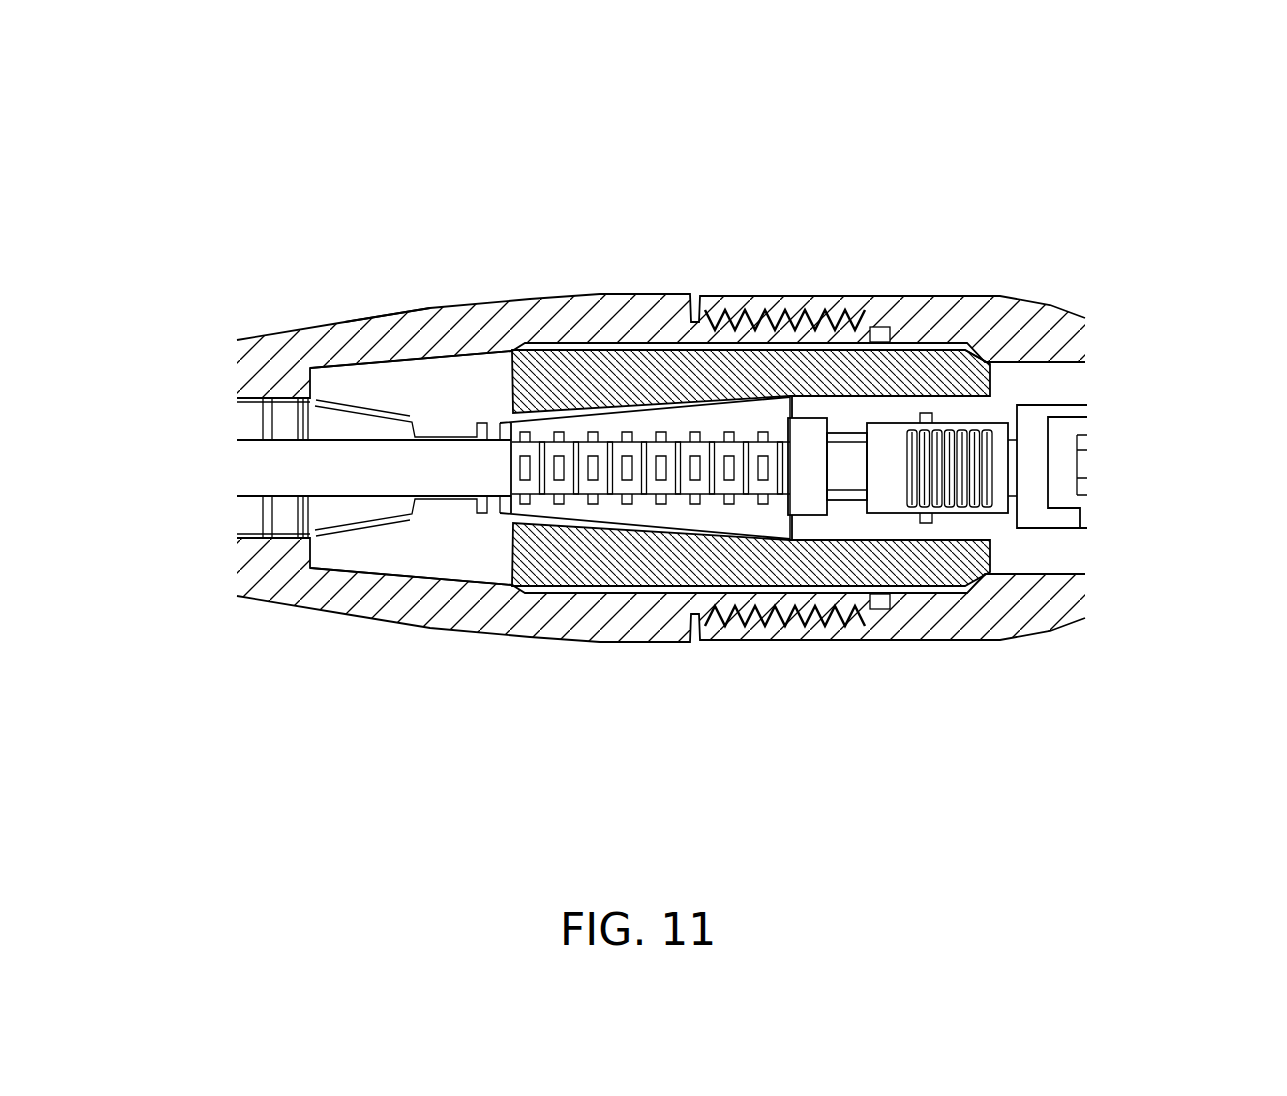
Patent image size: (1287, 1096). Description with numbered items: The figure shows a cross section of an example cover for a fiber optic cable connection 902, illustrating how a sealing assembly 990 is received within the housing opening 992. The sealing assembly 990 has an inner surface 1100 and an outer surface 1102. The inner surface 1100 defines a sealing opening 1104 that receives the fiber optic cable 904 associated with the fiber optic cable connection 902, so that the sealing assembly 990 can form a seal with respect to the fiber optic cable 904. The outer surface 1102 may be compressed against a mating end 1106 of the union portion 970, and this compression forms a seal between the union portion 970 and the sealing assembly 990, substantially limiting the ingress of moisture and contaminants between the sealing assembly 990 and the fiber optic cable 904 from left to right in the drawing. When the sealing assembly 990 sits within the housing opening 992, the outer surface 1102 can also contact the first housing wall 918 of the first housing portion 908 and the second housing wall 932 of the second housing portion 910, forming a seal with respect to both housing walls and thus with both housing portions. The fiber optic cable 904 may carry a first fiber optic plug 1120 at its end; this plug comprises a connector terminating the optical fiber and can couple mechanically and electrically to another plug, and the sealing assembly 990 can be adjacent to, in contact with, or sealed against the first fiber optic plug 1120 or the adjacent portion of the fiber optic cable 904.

The fiber optic cable connection 902 is at (1112, 375).
The fiber optic cable 904 is at (240, 440).
The first housing portion 908 is at (350, 322).
The second housing portion 910 is at (371, 612).
The first housing wall 918 is at (383, 325).
The second housing wall 932 is at (412, 600).
The union portion 970 is at (872, 300).
The sealing assembly 990 is at (605, 568).
The housing opening 992 is at (411, 395).
The inner surface 1100 is at (531, 512).
The outer surface 1102 is at (525, 585).
The sealing opening 1104 is at (508, 500).
The mating end 1106 is at (972, 353).
The first fiber optic plug 1120 is at (1062, 376).